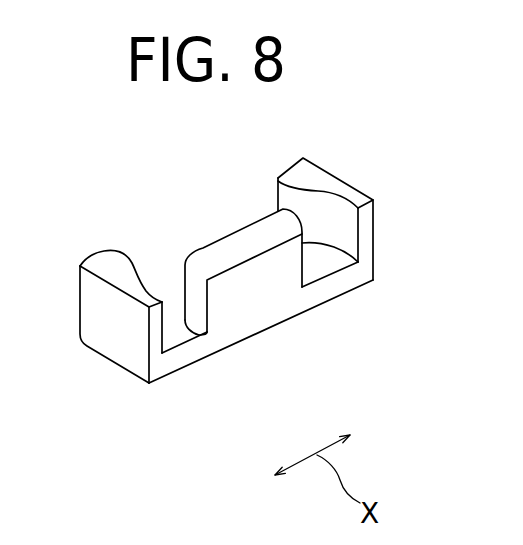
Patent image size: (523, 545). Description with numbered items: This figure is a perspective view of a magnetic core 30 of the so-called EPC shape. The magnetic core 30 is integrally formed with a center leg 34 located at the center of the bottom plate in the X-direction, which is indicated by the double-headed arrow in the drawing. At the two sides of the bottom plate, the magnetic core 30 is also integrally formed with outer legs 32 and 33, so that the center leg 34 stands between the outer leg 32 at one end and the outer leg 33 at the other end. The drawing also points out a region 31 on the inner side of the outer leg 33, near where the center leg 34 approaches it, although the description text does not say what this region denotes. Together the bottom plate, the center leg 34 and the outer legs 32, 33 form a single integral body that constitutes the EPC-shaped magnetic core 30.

The magnetic core 30 is at (210, 370).
The concave inner surface 31 is at (321, 266).
The outer leg 32 is at (115, 340).
The outer leg 33 is at (337, 184).
The center leg 34 is at (232, 250).